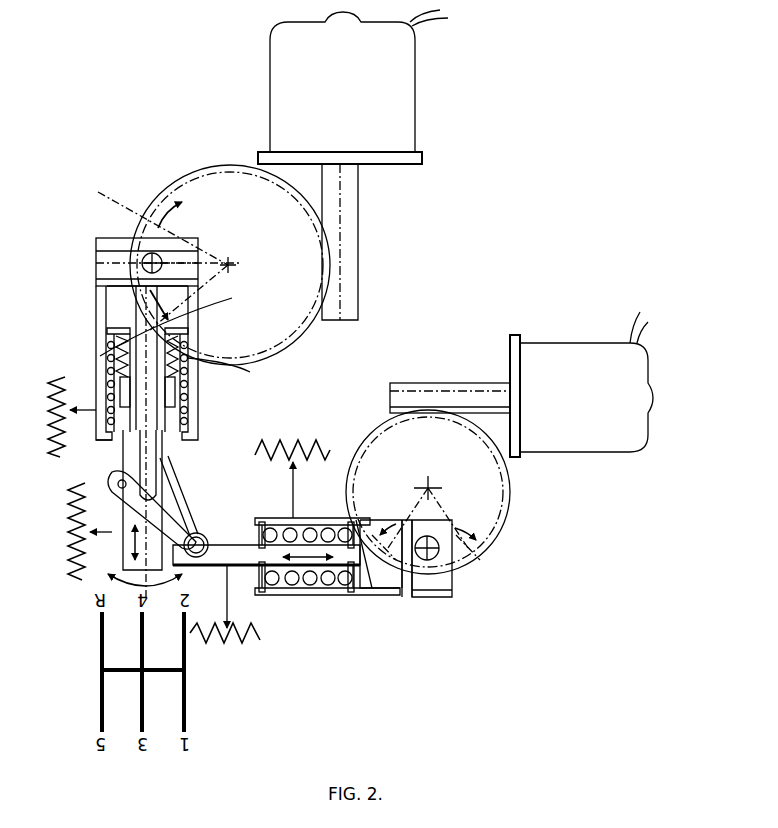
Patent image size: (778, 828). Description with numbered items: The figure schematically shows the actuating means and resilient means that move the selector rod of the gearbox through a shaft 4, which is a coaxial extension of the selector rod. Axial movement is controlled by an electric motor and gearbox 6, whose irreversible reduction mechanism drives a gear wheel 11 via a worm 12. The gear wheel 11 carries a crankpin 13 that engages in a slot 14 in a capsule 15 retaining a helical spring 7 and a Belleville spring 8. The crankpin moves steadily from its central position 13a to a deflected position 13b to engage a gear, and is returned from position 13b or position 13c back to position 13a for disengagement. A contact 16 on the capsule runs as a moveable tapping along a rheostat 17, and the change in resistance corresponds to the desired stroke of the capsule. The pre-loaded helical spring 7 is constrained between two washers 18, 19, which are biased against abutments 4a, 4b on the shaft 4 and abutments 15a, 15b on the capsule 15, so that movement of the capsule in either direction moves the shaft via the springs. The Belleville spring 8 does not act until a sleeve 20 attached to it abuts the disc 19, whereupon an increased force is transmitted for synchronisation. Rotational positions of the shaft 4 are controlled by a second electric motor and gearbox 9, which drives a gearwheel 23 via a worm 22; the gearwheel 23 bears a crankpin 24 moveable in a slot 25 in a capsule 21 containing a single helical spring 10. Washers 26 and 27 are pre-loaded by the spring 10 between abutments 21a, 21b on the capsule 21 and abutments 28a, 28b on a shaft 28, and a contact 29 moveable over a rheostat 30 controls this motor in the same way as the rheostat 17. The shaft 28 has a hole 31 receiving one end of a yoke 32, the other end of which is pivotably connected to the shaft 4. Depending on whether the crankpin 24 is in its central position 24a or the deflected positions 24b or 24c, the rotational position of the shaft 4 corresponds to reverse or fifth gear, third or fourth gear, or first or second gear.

The electric motor and gearbox 6 is at (418, 88).
The worm 12 is at (358, 216).
The gear wheel 11 is at (230, 165).
The crankpin 13 is at (134, 240).
The central position of crankpin 13a is at (128, 262).
The deflected position of crankpin 13b is at (150, 318).
The deflected position of crankpin 13c is at (148, 252).
The slot 14 is at (198, 248).
The capsule 15 is at (96, 340).
The abutment 15a is at (190, 331).
The abutment 15b is at (185, 445).
The contact 16 is at (90, 408).
The rheostat 17 is at (56, 380).
The washer 18 is at (110, 330).
The helical spring 7 is at (190, 381).
The Belleville spring 8 is at (222, 374).
The sleeve 20 is at (188, 405).
The washer 19 is at (112, 442).
The shaft 4 is at (123, 456).
The abutment 4a is at (176, 321).
The abutment 4b is at (172, 465).
The yoke 32 is at (180, 508).
The hole 31 is at (204, 566).
The capsule 21 is at (385, 580).
The abutment 21a is at (256, 518).
The abutment 21b is at (365, 520).
The shaft 28 is at (224, 545).
The abutment 28a is at (258, 595).
The abutment 28b is at (372, 600).
The washer 26 is at (272, 595).
The helical spring 10 is at (322, 595).
The washer 27 is at (348, 595).
The rheostat 30 is at (292, 432).
The contact 29 is at (295, 488).
The gearwheel 23 is at (372, 428).
The worm 22 is at (445, 383).
The electric motor and gearbox 9 is at (575, 343).
The crankpin 24 is at (460, 545).
The central position of crankpin 24a is at (440, 597).
The deflected position of crankpin 24b is at (398, 540).
The deflected position of crankpin 24c is at (458, 530).
The slot 25 is at (420, 590).